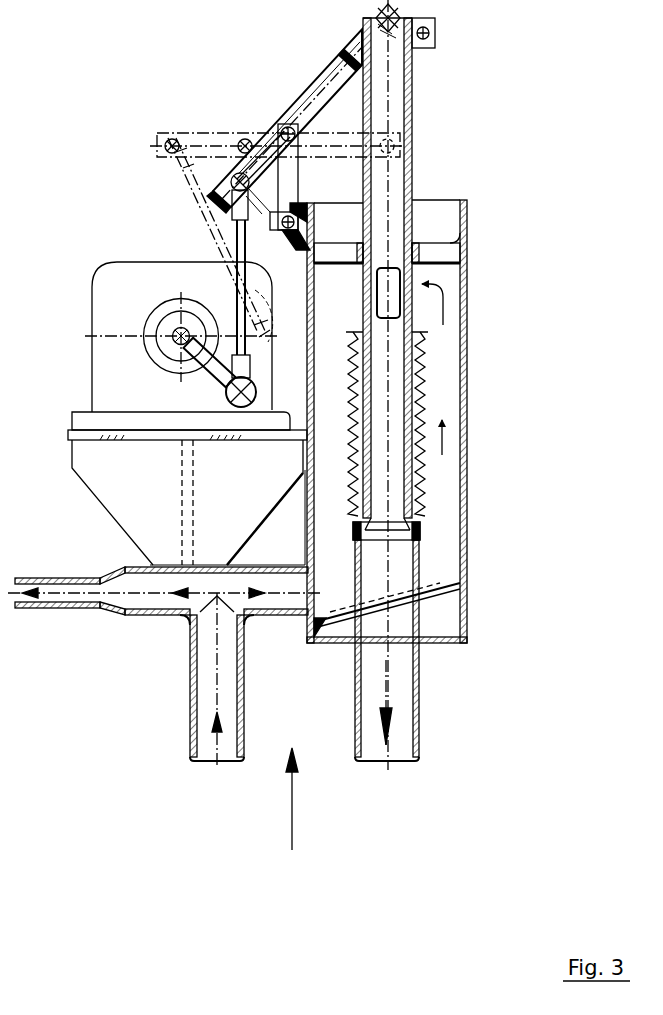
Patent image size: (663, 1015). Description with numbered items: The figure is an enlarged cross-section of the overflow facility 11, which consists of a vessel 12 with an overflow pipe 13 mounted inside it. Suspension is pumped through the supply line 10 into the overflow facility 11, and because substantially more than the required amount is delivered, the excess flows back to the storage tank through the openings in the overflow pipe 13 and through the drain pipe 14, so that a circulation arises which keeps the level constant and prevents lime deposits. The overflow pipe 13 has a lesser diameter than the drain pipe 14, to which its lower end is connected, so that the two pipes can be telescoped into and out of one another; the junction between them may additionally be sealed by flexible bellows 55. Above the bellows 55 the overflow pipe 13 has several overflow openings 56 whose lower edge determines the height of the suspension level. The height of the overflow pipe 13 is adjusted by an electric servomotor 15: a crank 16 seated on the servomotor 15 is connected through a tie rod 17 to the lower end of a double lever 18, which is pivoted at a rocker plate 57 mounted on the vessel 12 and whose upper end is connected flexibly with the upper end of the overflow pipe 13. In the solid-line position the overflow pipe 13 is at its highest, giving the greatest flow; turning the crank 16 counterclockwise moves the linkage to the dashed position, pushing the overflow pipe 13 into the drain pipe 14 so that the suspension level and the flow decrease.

The supply line 10 is at (50, 610).
The overflow facility 11 is at (292, 816).
The vessel 12 is at (467, 520).
The overflow pipe 13 is at (412, 173).
The drain pipe 14 is at (419, 693).
The electric servomotor 15 is at (100, 293).
The crank 16 is at (208, 375).
The tie rod 17 is at (240, 238).
The double lever 18 is at (320, 93).
The flexible bellows 55 is at (414, 397).
The overflow openings 56 is at (397, 312).
The rocker plate 57 is at (243, 163).